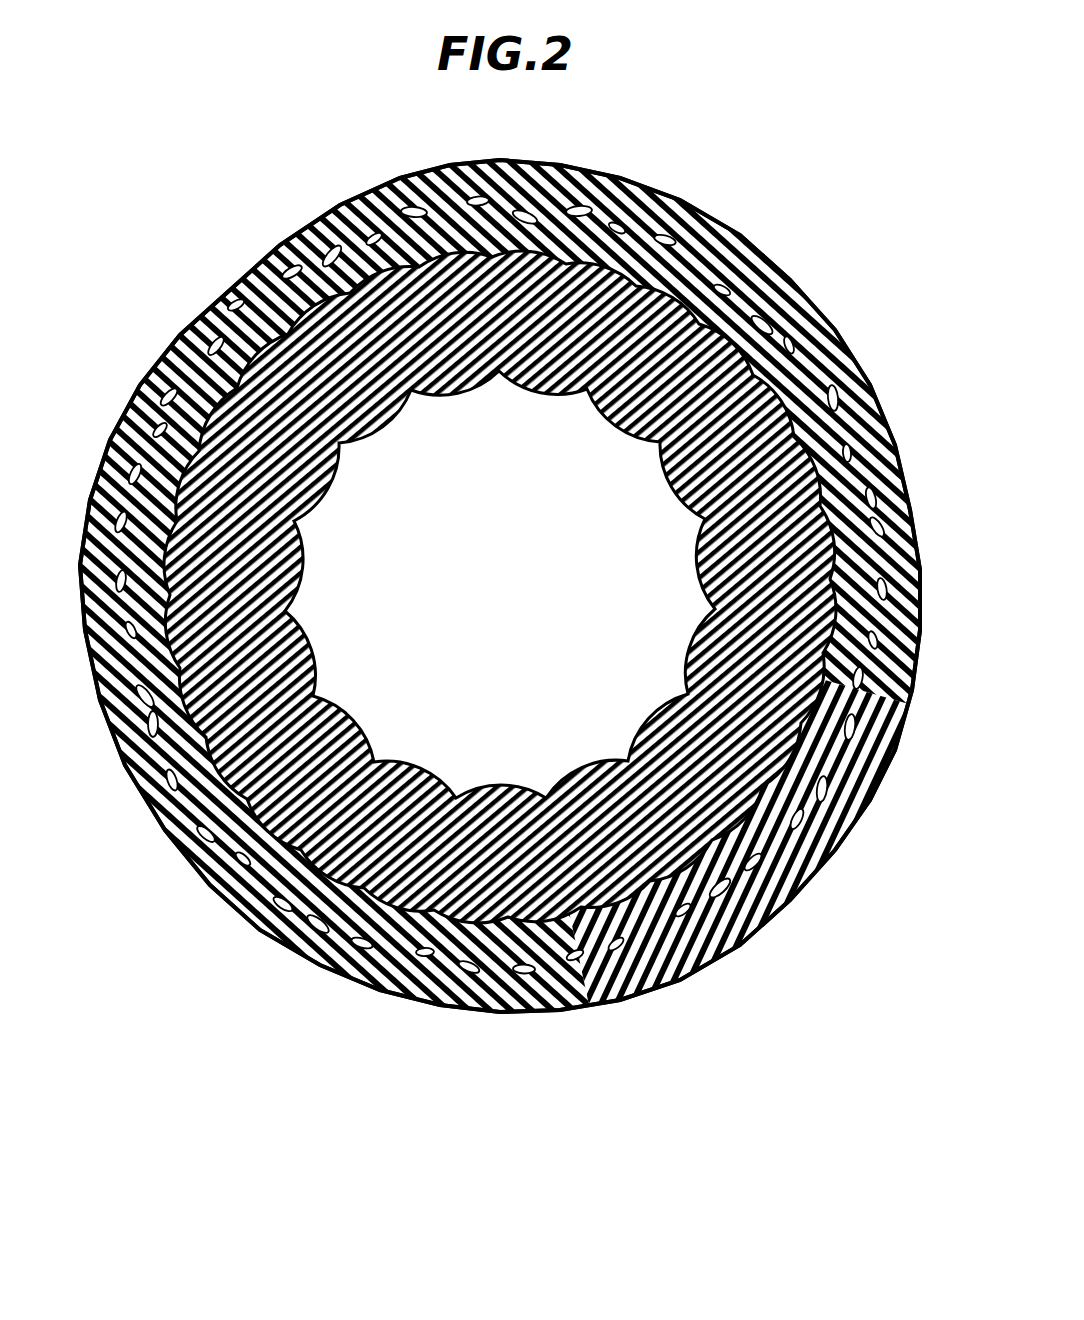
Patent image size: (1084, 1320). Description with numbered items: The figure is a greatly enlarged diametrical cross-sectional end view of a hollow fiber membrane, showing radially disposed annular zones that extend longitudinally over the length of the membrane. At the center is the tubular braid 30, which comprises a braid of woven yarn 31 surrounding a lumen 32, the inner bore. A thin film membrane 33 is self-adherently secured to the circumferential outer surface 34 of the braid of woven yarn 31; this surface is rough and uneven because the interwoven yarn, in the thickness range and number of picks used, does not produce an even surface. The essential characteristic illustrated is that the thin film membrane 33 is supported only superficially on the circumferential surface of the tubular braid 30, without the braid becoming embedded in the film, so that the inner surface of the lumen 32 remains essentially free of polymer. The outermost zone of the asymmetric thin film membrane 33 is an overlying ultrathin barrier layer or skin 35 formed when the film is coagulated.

The tubular braid 30 is at (776, 247).
The braid of woven yarn 31 is at (522, 398).
The lumen 32 is at (532, 607).
The thin film membrane 33 is at (514, 1022).
The circumferential outer surface 34 is at (700, 930).
The skin 35 is at (205, 848).